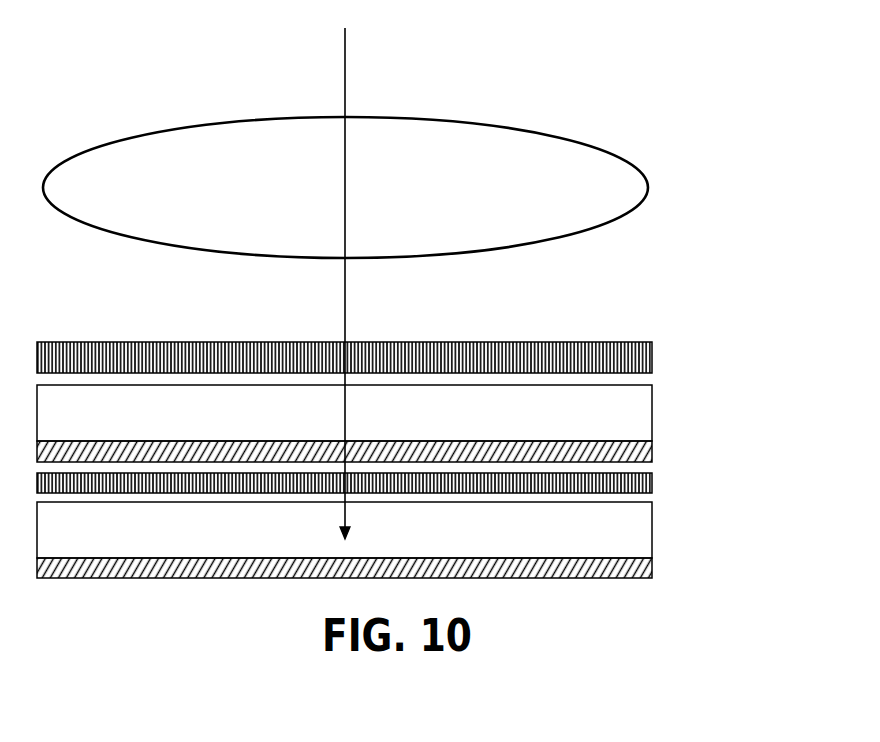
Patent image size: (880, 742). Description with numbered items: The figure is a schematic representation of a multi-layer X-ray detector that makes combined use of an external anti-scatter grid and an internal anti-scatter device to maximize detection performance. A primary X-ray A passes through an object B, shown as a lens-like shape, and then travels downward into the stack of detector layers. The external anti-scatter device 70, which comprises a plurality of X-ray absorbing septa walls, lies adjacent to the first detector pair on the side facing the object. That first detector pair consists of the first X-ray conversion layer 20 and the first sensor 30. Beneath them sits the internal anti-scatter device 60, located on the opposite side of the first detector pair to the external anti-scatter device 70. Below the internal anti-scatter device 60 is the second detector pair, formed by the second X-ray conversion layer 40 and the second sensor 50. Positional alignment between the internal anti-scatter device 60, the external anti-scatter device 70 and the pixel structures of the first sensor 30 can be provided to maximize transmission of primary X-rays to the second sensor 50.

The primary X-ray A is at (345, 72).
The object B is at (628, 188).
The external anti-scatter device 70 is at (652, 356).
The X-ray conversion layer 1 20 is at (640, 417).
The sensor 1 30 is at (652, 456).
The internal anti-scatter device 60 is at (648, 482).
The X-ray conversion layer 2 40 is at (640, 530).
The sensor 2 50 is at (652, 568).